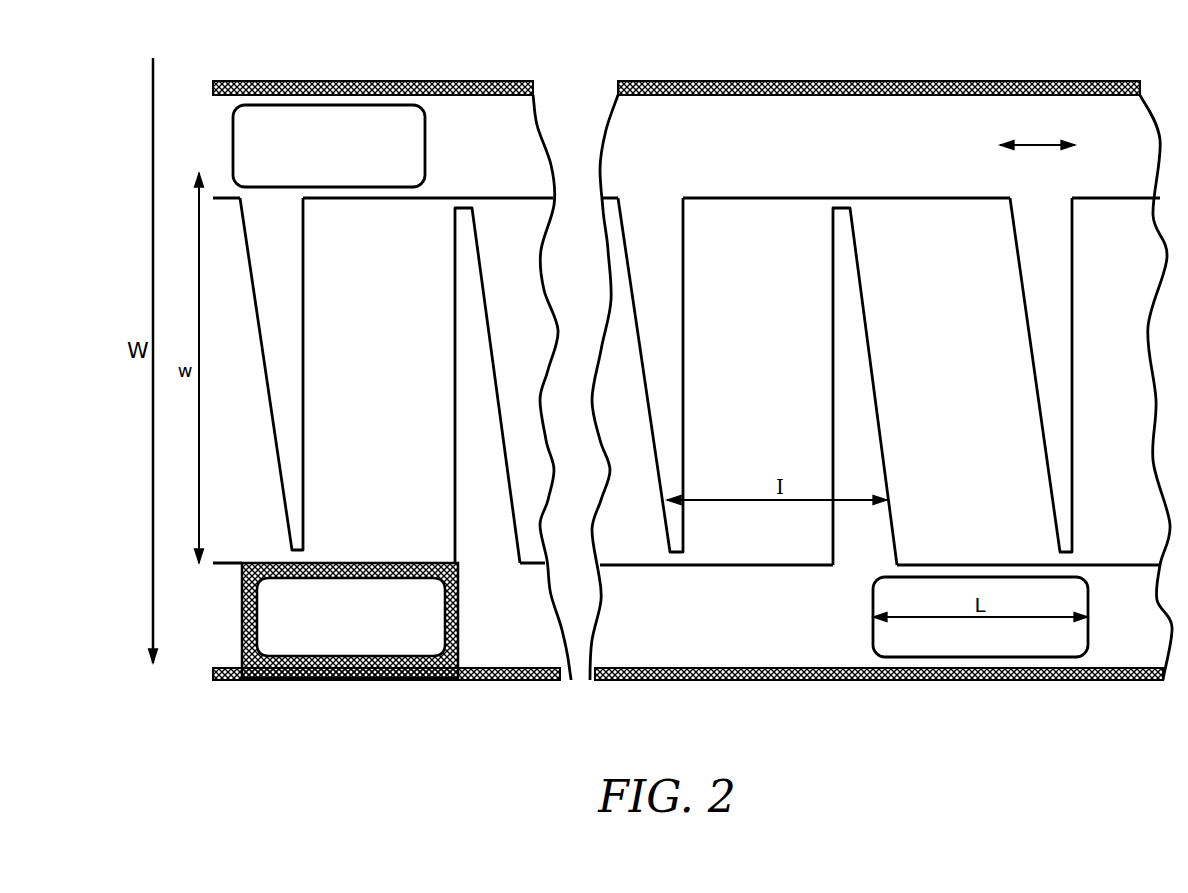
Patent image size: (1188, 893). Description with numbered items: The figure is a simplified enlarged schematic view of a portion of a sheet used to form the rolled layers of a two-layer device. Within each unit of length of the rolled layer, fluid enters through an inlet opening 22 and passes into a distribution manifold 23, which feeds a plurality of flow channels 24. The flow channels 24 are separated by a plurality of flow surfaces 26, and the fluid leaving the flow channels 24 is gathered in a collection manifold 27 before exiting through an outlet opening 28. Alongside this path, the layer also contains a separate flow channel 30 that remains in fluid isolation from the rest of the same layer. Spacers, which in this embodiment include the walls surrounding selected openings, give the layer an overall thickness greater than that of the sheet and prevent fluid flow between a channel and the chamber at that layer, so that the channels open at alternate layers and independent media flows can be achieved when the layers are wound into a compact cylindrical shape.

The inlet opening 22 is at (985, 640).
The distribution manifold 23 is at (833, 650).
The flow channels 24 is at (1053, 492).
The flow surfaces 26 is at (393, 253).
The collection manifold 27 is at (472, 127).
The outlet opening 28 is at (320, 132).
The separate flow channel 30 is at (352, 628).